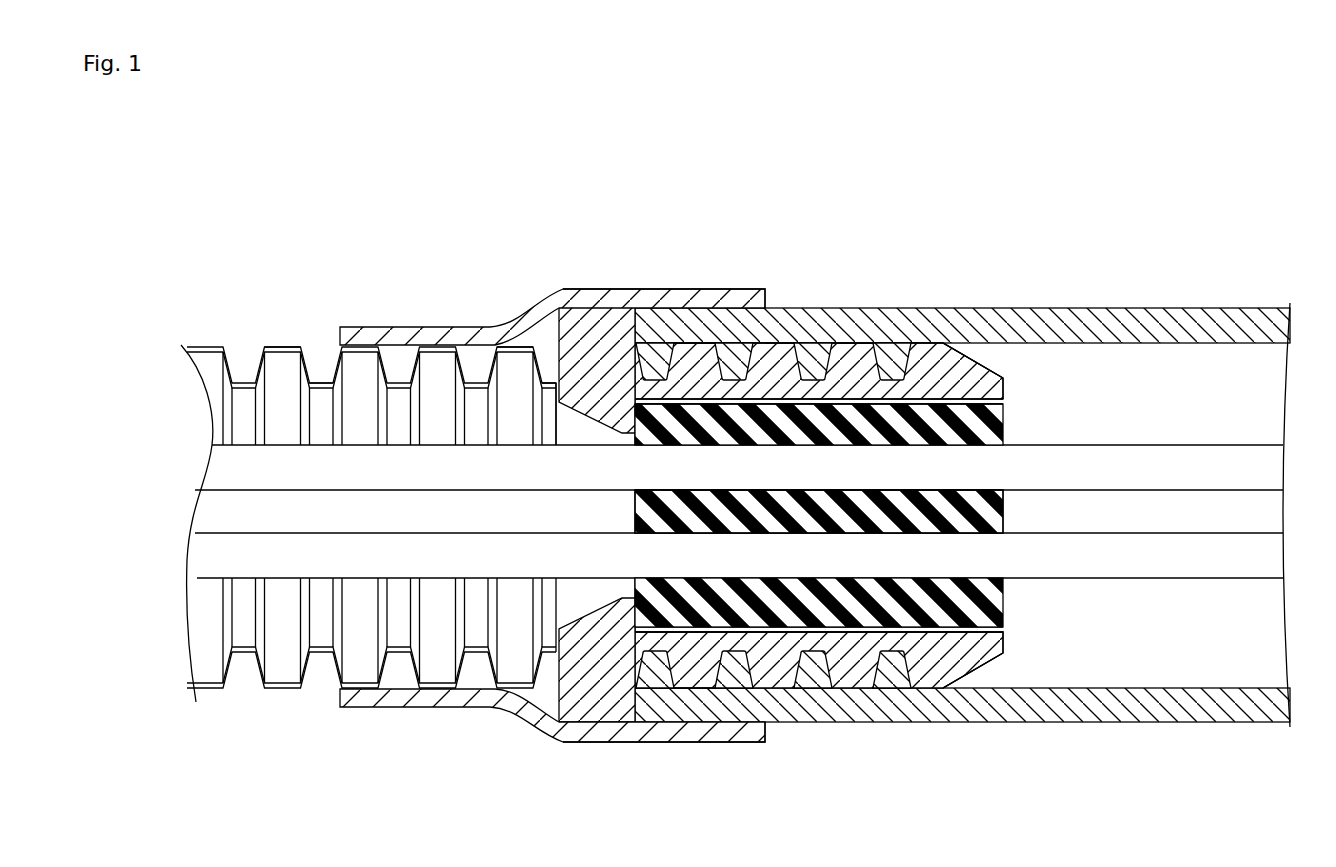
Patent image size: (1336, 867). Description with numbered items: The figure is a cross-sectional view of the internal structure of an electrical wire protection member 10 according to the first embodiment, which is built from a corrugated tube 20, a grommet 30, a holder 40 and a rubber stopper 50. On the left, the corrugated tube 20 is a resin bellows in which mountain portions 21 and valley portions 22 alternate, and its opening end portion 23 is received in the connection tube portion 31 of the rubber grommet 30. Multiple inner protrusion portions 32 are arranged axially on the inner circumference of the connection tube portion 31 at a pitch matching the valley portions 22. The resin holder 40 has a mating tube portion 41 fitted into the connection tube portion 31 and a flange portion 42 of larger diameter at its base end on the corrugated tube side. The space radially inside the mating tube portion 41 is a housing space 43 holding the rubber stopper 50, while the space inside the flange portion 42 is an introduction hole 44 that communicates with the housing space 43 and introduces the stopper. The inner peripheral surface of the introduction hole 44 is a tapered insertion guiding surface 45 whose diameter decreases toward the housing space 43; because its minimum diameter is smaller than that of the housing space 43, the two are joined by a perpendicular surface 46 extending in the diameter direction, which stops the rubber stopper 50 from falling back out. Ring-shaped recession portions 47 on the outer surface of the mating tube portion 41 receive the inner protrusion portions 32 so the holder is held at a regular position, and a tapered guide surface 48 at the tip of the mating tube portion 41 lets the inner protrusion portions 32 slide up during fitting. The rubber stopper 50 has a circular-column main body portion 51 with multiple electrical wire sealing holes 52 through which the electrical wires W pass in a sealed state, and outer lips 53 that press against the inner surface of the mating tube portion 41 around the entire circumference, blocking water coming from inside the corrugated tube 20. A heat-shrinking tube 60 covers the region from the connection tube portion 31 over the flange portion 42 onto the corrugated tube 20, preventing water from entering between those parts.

The protection member 10 is at (747, 226).
The corrugated tube 20 is at (240, 330).
The mountain portions 21 is at (295, 346).
The valley portions 22 is at (322, 368).
The opening end portion 23 is at (513, 395).
The introduction hole 44 is at (573, 433).
The grommet 30 is at (1071, 284).
The connection tube portion 31 is at (790, 330).
The inner protrusion portions 32 is at (832, 356).
The holder 40 is at (1030, 378).
The mating tube portion 41 is at (973, 386).
The flange portion 42 is at (612, 332).
The housing space 43 is at (975, 402).
The insertion guiding surface 45 is at (594, 430).
The perpendicular surface 46 is at (668, 398).
The recession portions 47 is at (810, 376).
The guide surface 48 is at (995, 372).
The rubber stopper 50 is at (1020, 617).
The main body portion 51 is at (987, 512).
The electrical wire sealing holes 52 is at (950, 490).
The outer lips 53 is at (868, 402).
The heat-shrinking tube 60 is at (540, 313).
The electrical wires W is at (1240, 462).